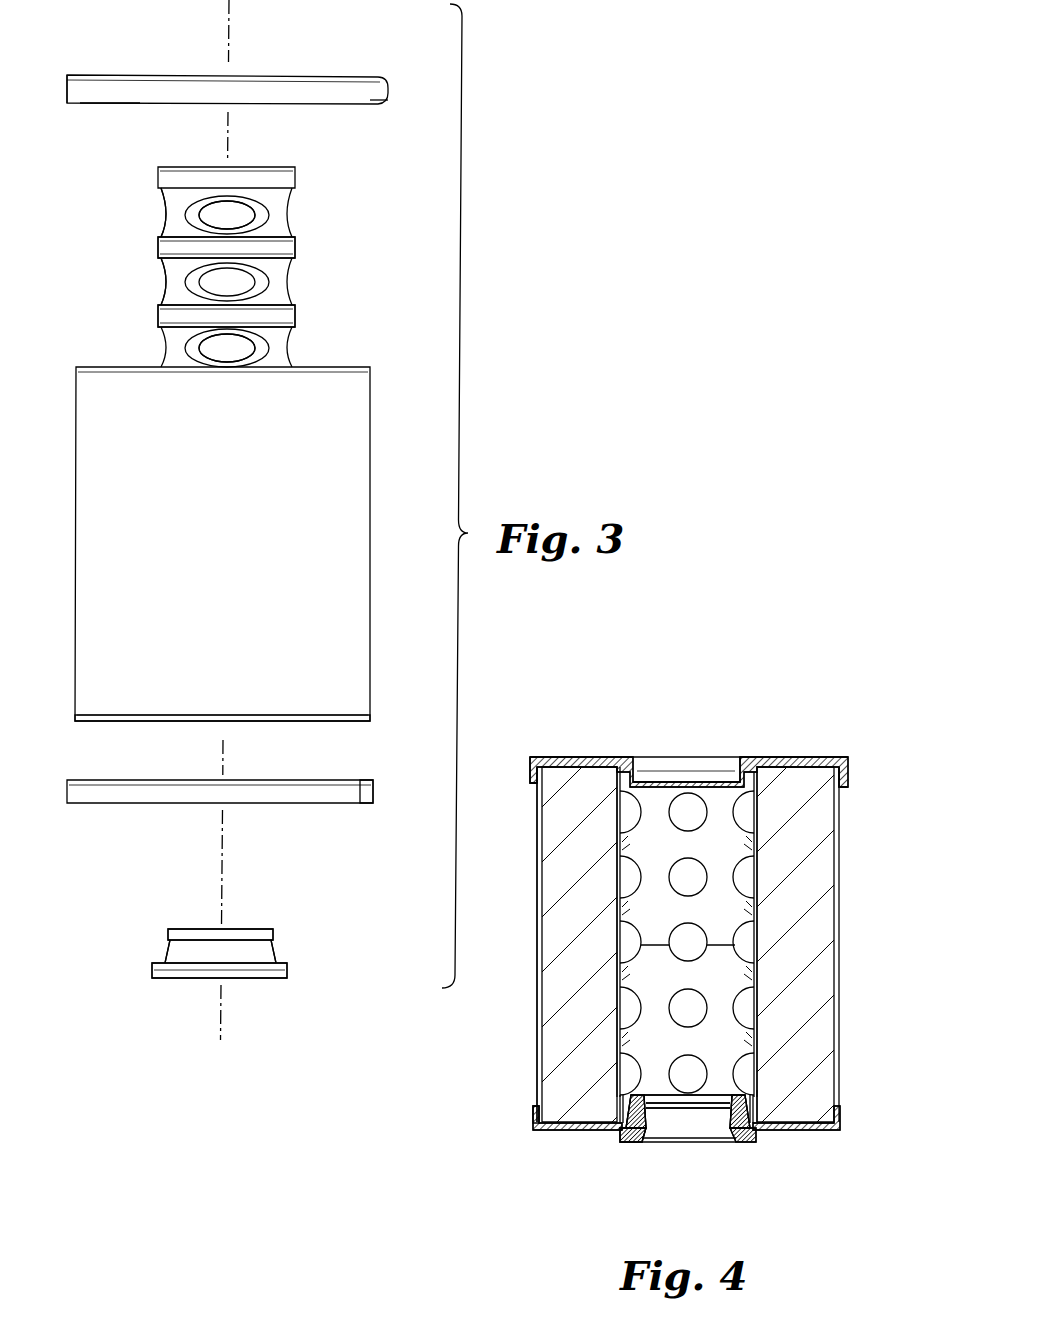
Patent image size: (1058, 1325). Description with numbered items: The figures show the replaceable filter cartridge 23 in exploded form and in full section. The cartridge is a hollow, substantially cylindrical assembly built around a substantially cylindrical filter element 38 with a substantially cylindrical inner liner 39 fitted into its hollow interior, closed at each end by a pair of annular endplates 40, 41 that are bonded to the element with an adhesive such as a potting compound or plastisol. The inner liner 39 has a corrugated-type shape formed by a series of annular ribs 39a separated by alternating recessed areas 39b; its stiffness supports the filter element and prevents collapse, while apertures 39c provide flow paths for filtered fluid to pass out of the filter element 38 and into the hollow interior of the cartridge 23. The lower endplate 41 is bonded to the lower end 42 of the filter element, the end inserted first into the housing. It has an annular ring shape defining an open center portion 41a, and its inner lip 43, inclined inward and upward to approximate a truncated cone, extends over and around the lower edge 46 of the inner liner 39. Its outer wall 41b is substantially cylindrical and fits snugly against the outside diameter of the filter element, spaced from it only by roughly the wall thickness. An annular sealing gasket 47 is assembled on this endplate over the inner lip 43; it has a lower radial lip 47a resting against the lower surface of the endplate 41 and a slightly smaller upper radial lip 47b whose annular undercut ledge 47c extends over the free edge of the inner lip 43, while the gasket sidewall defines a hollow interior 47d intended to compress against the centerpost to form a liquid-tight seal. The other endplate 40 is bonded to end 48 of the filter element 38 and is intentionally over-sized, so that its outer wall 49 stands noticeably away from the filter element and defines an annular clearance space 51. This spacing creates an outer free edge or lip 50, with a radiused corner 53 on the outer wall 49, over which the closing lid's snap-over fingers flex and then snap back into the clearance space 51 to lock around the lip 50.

In FIG. 3, the replaceable filter cartridge 23 is at (395, 352).
In FIG. 4, the replaceable filter cartridge 23 is at (862, 756).
In FIG. 3, the filter element 38 is at (382, 598).
In FIG. 4, the filter element 38 is at (557, 932).
In FIG. 3, the inner liner 39 is at (320, 280).
In FIG. 4, the inner liner 39 is at (612, 1060).
In FIG. 3, the annular ribs 39a is at (285, 248).
In FIG. 3, the recessed areas 39b is at (168, 190).
In FIG. 3, the apertures 39c is at (210, 222).
In FIG. 3, the endplate 40 is at (366, 72).
In FIG. 4, the endplate 40 is at (782, 760).
In FIG. 3, the endplate 41 is at (120, 818).
In FIG. 4, the endplate 41 is at (808, 1133).
In FIG. 4, the open center portion 41a is at (690, 1122).
In FIG. 3, the outer wall 41b is at (360, 792).
In FIG. 4, the outer wall 41b is at (535, 1125).
In FIG. 3, the lower end 42 is at (380, 718).
In FIG. 4, the lower end 42 is at (806, 1105).
In FIG. 4, the inner lip 43 is at (650, 1143).
In FIG. 4, the lower edge 46 is at (758, 1118).
In FIG. 3, the annular sealing gasket 47 is at (290, 958).
In FIG. 4, the annular sealing gasket 47 is at (748, 1147).
In FIG. 3, the lower radial lip 47a is at (160, 972).
In FIG. 4, the lower radial lip 47a is at (626, 1142).
In FIG. 3, the upper radial lip 47b is at (178, 931).
In FIG. 4, the upper radial lip 47b is at (740, 1098).
In FIG. 3, the annular undercut ledge 47c is at (164, 952).
In FIG. 4, the annular undercut ledge 47c is at (634, 1098).
In FIG. 4, the hollow interior 47d is at (665, 1128).
In FIG. 4, the end 48 is at (800, 775).
In FIG. 3, the outer wall 49 is at (368, 98).
In FIG. 4, the outer wall 49 is at (850, 778).
In FIG. 3, the lip 50 is at (110, 103).
In FIG. 4, the lip 50 is at (846, 790).
In FIG. 4, the annular clearance space 51 is at (541, 800).
In FIG. 3, the radiused corner 53 is at (68, 75).
In FIG. 4, the radiused corner 53 is at (530, 765).